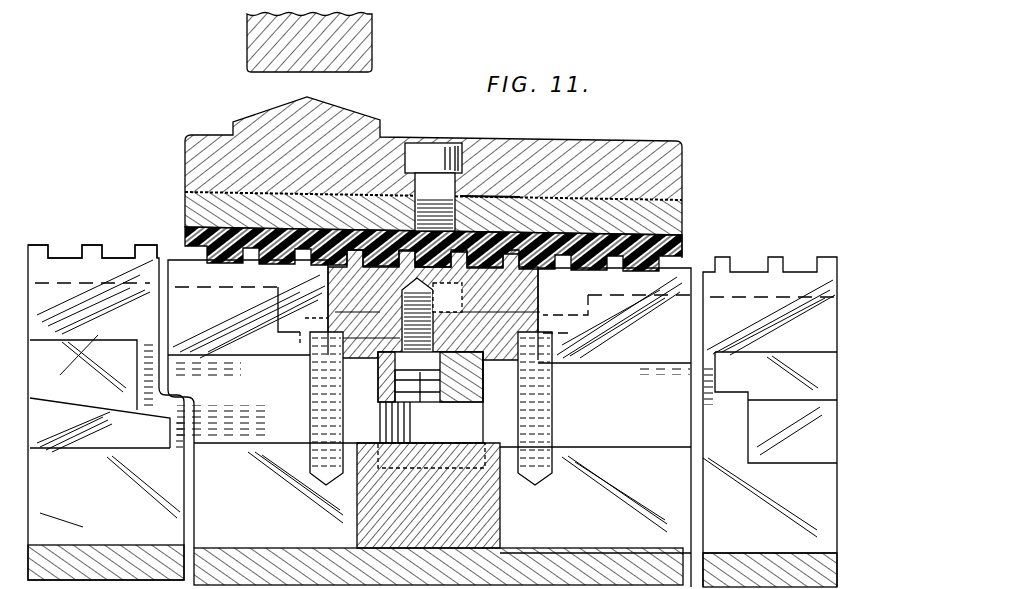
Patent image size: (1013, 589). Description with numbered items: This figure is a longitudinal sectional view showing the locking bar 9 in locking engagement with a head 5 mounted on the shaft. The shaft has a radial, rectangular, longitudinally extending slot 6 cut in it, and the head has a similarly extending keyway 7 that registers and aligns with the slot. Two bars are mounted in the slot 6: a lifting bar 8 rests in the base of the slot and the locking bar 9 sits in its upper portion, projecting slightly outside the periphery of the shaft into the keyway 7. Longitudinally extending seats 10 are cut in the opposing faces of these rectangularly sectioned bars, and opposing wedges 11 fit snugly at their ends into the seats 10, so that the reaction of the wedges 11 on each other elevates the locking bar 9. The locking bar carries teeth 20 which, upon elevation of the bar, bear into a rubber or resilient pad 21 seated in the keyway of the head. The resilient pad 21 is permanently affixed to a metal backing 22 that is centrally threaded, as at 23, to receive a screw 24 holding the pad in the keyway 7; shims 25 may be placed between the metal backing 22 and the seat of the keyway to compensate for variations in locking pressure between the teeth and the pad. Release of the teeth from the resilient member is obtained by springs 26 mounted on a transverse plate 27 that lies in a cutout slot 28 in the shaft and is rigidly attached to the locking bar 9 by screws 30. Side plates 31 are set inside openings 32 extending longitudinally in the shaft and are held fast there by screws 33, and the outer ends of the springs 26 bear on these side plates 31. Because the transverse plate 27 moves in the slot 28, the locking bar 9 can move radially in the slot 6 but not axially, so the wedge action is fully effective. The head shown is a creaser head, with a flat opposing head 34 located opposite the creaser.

The head 5 is at (592, 143).
The slot 6 is at (535, 552).
The keyway 7 is at (603, 200).
The lifting bar 8 is at (590, 462).
The locking bar 9 is at (102, 270).
The seat 10 is at (120, 338).
The wedge 11 is at (62, 373).
The teeth 20 is at (151, 256).
The resilient pad 21 is at (670, 248).
The metal backing 22 is at (680, 214).
The threaded portion 23 is at (490, 196).
The screw 24 is at (424, 158).
The shim 25 is at (682, 157).
The spring 26 is at (398, 376).
The transverse plate 27 is at (388, 394).
The cutout slot 28 is at (483, 417).
The screw 30 is at (418, 392).
The side plate 31 is at (292, 335).
The opening 32 is at (280, 333).
The screw 33 is at (553, 425).
The flat opposing head 34 is at (370, 56).